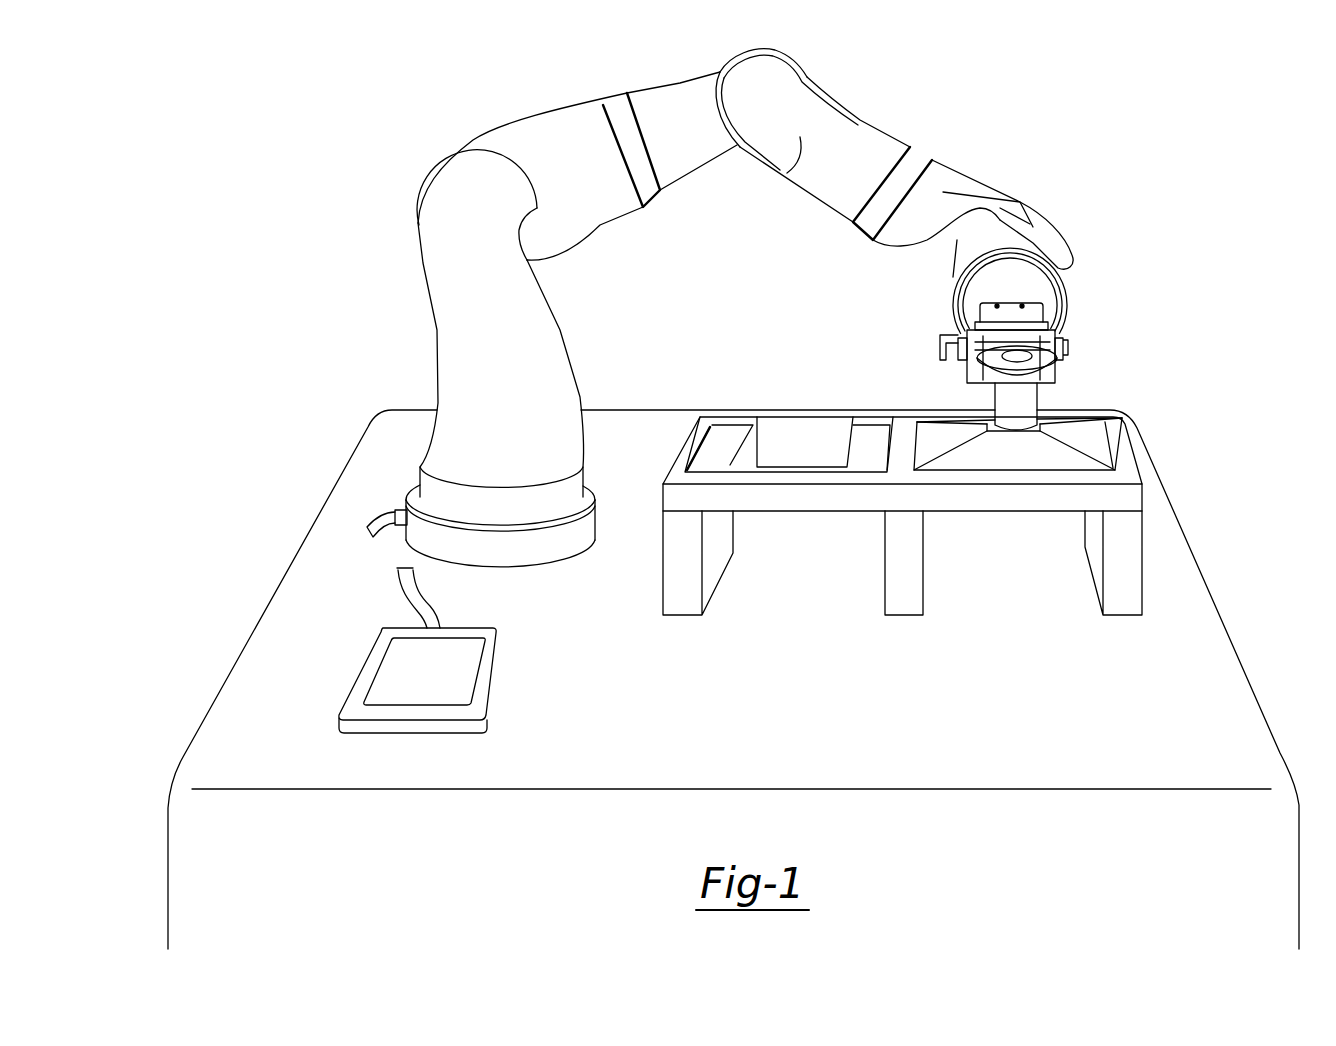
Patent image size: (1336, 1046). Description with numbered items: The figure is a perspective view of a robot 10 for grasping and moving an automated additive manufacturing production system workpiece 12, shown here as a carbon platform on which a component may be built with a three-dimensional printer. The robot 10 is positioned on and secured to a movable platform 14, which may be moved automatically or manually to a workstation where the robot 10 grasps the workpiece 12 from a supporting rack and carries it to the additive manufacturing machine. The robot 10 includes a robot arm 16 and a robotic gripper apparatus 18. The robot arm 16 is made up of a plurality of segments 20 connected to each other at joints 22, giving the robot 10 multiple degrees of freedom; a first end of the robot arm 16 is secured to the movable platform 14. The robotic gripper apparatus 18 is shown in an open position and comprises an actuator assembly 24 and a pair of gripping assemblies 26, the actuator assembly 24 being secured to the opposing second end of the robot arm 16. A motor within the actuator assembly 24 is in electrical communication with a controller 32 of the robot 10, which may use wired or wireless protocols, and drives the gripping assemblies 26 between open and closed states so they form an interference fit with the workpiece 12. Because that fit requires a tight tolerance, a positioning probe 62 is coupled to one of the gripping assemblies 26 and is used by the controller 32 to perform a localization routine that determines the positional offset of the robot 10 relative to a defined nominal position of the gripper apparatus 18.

The robot 10 is at (1027, 143).
The AAMPS workpiece 12 is at (1082, 437).
The movable platform 14 is at (247, 688).
The robot arm 16 is at (893, 130).
The robotic gripper apparatus 18 is at (1117, 377).
The segments 20 is at (440, 223).
The joints 22 is at (423, 185).
The actuator assembly 24 is at (1033, 310).
The gripping assemblies 26 is at (930, 342).
The controller 32 is at (470, 676).
The positioning probe 62 is at (943, 355).